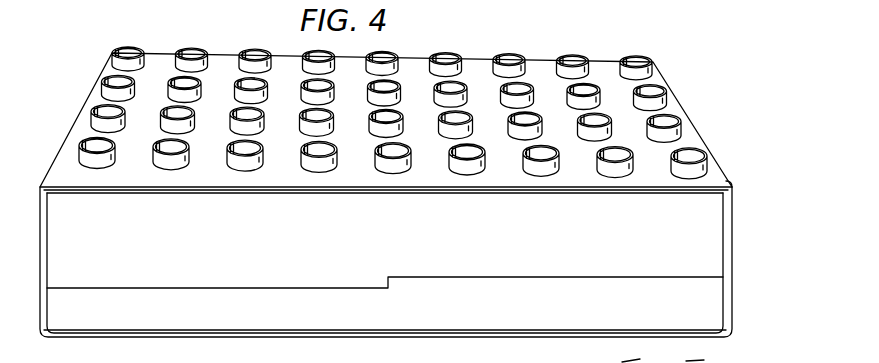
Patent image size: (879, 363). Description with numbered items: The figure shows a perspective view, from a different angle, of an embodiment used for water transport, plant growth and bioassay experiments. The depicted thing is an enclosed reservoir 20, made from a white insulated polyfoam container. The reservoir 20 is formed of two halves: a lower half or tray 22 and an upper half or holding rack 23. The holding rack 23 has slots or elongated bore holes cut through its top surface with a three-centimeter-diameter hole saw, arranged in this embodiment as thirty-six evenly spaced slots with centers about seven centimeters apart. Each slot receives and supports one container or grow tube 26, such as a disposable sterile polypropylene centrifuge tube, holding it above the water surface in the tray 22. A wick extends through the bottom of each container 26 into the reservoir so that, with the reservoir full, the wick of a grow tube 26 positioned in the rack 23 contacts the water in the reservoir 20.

The enclosed reservoir 20 is at (711, 257).
The tray 22 is at (713, 322).
The holding rack 23 is at (709, 207).
The container 26 is at (520, 55).